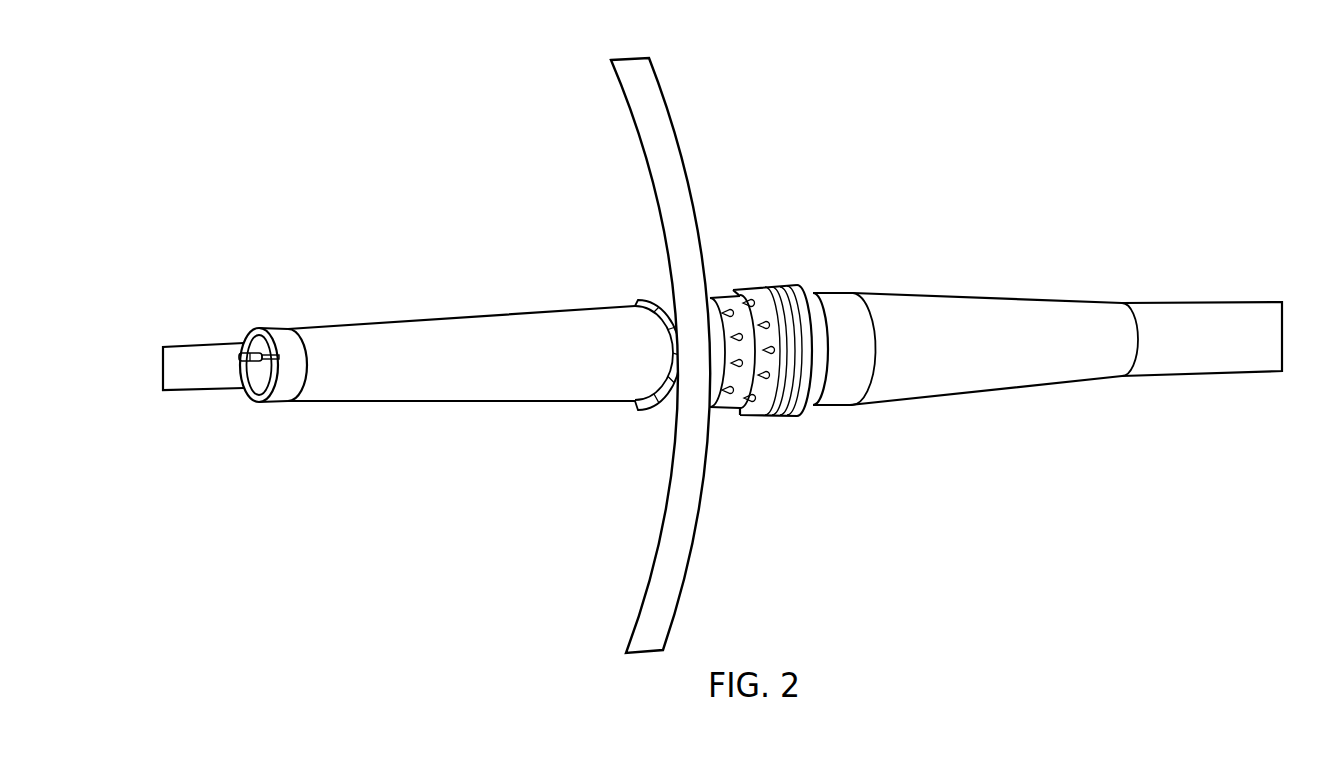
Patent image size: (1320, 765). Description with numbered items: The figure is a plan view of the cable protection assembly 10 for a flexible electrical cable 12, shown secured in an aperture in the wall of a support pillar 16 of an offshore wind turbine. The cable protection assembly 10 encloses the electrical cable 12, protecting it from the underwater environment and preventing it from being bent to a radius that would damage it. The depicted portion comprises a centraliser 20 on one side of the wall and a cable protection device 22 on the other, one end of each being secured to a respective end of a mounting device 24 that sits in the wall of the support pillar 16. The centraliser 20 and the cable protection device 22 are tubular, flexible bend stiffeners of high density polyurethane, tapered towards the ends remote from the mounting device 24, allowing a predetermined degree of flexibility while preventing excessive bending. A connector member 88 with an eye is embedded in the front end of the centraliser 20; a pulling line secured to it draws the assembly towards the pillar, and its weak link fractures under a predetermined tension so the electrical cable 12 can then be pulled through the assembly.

The cable protection assembly 10 is at (800, 218).
The flexible electrical cable 12 is at (187, 345).
The support pillar 16 is at (675, 126).
The centraliser 20 is at (526, 325).
The cable protection device 22 is at (995, 320).
The mounting device 24 is at (735, 421).
The connector member 88 is at (247, 356).